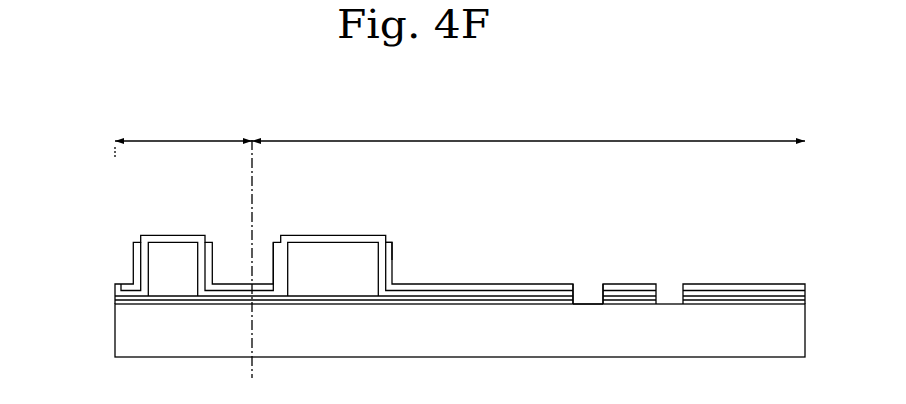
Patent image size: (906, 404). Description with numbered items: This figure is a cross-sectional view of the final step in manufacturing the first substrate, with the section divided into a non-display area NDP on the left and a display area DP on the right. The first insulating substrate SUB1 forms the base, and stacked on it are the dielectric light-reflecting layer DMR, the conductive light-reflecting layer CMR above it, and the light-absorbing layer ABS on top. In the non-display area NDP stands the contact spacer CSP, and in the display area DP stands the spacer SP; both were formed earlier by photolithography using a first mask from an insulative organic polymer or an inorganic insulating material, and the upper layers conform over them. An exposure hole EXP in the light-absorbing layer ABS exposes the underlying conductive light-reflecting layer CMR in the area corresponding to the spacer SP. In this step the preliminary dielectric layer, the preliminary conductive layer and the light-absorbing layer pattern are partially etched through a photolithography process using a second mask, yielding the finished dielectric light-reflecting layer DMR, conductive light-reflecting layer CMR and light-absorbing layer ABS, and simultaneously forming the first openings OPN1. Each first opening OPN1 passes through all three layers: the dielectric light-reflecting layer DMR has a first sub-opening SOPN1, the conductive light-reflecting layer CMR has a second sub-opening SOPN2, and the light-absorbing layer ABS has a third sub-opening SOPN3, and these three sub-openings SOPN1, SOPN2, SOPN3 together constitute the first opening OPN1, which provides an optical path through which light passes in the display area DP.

The non-display area NDP is at (183, 136).
The display area DP is at (528, 129).
The first insulating substrate SUB1 is at (126, 346).
The dielectric light-reflecting layer DMR is at (118, 302).
The conductive light-reflecting layer CMR is at (118, 297).
The light-absorbing layer ABS is at (118, 287).
The contact spacer CSP is at (173, 253).
The spacer SP is at (327, 253).
The exposure hole EXP is at (394, 237).
The first sub-opening SOPN1 is at (576, 290).
The second sub-opening SOPN2 is at (577, 294).
The third sub-opening SOPN3 is at (580, 299).
The first opening OPN1 is at (697, 200).